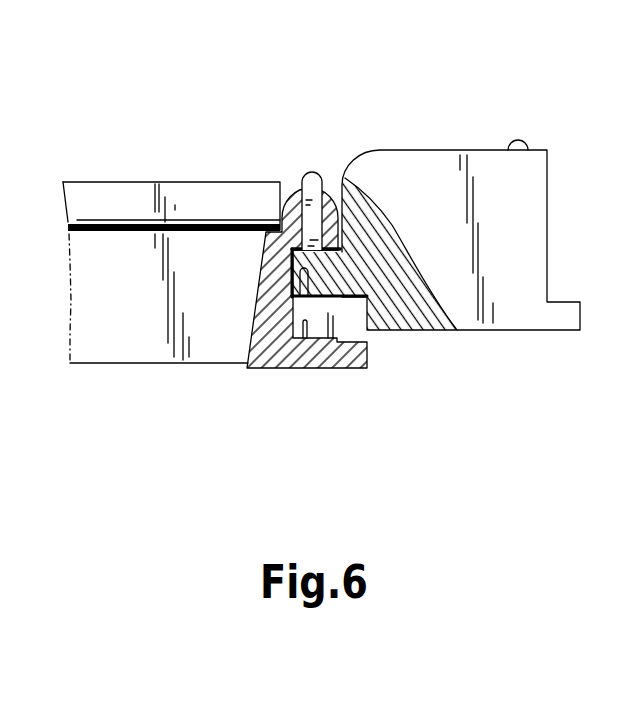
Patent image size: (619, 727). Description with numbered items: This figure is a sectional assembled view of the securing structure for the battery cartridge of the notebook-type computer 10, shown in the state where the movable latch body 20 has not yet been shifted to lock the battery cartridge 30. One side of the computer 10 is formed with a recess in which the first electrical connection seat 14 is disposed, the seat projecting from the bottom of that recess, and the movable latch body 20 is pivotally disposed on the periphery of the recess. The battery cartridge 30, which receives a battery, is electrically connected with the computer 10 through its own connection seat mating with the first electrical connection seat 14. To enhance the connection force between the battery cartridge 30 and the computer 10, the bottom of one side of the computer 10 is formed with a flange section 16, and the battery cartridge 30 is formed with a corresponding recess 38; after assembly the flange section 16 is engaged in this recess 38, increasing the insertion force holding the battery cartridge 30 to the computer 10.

The notebook-type computer 10 is at (183, 184).
The first electrical connection seat 14 is at (312, 322).
The flange section 16 is at (368, 358).
The movable latch body 20 is at (310, 172).
The battery cartridge 30 is at (445, 150).
The recess 38 is at (355, 303).